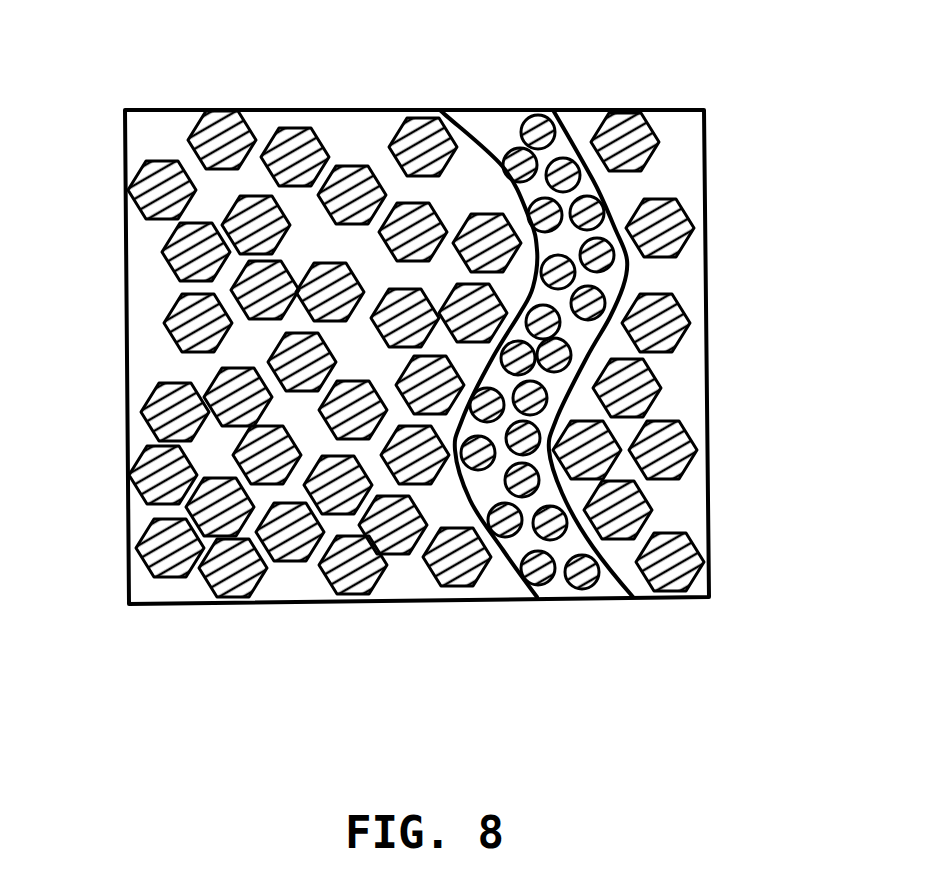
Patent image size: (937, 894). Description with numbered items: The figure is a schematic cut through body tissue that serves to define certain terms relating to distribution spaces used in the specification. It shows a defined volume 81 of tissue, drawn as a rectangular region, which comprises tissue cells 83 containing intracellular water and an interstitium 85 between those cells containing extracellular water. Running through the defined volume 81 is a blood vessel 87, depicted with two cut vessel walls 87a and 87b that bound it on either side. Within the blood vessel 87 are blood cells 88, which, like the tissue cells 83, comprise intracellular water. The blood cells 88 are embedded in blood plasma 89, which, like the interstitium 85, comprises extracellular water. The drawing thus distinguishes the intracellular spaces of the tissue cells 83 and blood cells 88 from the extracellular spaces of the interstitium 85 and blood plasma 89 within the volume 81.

The defined volume 81 is at (707, 165).
The tissue cells 83 is at (225, 137).
The interstitium 85 is at (672, 120).
The blood vessel 87 is at (552, 344).
The vessel wall 87a is at (440, 110).
The vessel wall 87b is at (580, 133).
The blood cells 88 is at (537, 118).
The blood plasma 89 is at (497, 127).